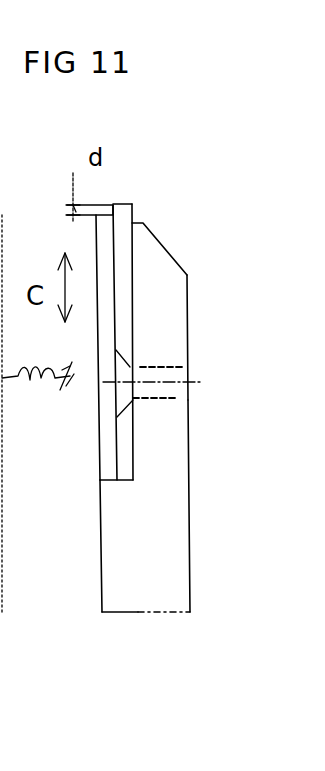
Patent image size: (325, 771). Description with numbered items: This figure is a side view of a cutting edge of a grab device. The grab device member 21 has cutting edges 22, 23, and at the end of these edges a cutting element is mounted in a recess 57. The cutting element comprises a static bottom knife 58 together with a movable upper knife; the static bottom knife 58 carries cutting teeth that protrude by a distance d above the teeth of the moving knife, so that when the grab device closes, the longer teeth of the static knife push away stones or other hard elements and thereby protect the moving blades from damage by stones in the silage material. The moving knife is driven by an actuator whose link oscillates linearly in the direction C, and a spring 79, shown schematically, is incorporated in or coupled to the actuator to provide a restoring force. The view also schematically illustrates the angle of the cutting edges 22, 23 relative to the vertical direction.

The grab device member 21 is at (189, 506).
The cutting edge 22 is at (201, 270).
The cutting edge 23 is at (230, 337).
The recess 57 is at (123, 487).
The static bottom knife 58 is at (139, 176).
The spring 79 is at (31, 385).